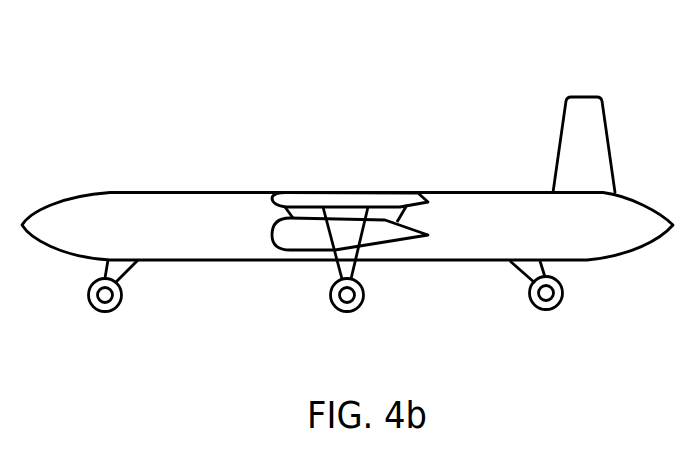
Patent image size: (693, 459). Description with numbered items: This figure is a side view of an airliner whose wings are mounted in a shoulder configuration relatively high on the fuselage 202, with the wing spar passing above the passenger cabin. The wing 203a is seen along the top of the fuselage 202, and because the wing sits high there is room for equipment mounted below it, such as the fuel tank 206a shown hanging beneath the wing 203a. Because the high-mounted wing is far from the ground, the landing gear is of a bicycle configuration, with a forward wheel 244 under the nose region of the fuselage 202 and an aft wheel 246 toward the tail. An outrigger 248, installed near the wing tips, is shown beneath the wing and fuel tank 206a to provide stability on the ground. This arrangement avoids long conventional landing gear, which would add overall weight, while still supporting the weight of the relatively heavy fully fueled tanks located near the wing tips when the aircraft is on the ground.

The fuselage 202 is at (193, 192).
The wing 203a is at (352, 193).
The fuel tank 206a is at (303, 238).
The forward wheel 244 is at (102, 311).
The outrigger 248 is at (348, 311).
The aft wheel 246 is at (545, 309).